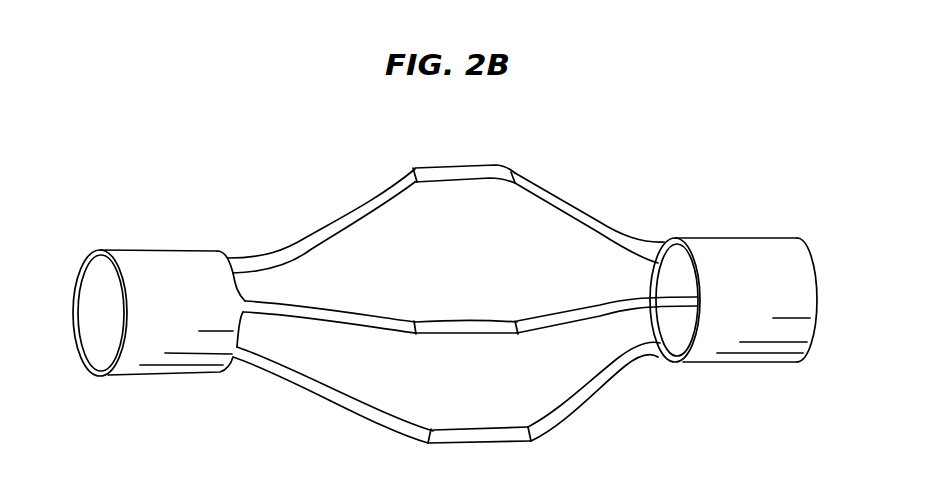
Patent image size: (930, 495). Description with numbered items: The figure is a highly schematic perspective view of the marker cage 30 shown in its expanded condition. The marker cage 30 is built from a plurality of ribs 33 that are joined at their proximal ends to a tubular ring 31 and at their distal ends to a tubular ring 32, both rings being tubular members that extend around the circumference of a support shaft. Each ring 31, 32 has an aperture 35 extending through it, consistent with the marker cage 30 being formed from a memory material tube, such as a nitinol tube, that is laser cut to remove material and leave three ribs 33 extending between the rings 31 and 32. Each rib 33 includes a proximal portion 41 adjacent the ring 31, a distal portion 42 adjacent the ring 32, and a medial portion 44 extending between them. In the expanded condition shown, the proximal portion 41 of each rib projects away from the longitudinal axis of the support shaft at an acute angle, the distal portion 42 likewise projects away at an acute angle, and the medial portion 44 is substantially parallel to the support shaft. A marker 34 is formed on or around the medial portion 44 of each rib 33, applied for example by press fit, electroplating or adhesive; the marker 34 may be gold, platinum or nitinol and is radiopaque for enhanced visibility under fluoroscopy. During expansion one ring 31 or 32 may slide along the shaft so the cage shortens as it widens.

The marker cage 30 is at (126, 196).
The tubular ring 31 is at (174, 250).
The tubular ring 32 is at (741, 238).
The rib 33 is at (312, 237).
The marker 34 is at (461, 165).
The aperture 35 is at (100, 313).
The proximal portion 41 is at (349, 232).
The distal portion 42 is at (576, 228).
The medial portion 44 is at (445, 182).